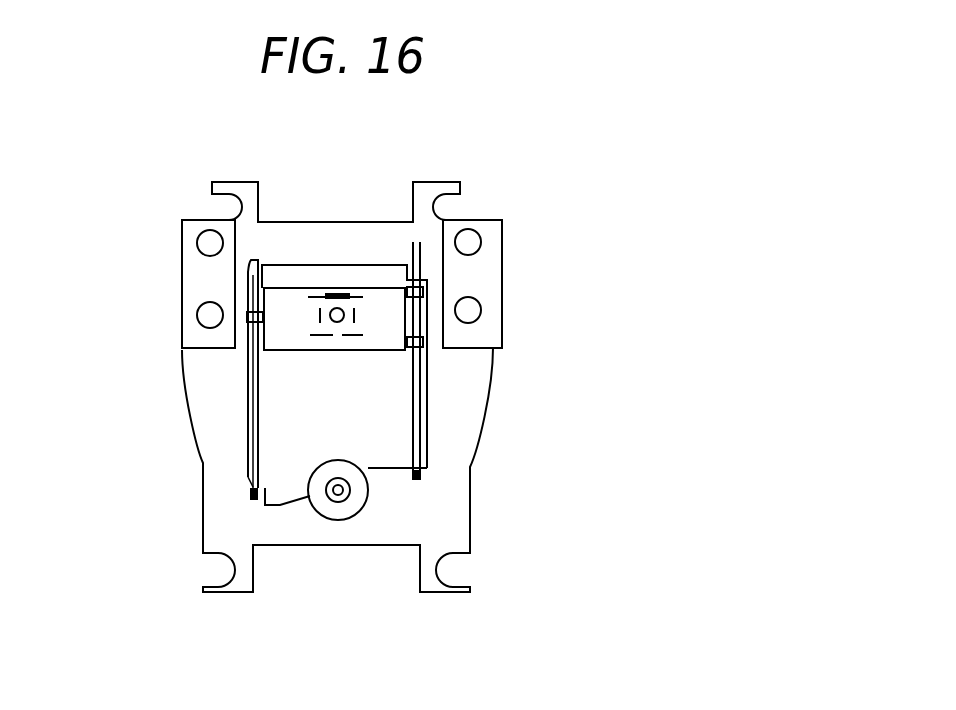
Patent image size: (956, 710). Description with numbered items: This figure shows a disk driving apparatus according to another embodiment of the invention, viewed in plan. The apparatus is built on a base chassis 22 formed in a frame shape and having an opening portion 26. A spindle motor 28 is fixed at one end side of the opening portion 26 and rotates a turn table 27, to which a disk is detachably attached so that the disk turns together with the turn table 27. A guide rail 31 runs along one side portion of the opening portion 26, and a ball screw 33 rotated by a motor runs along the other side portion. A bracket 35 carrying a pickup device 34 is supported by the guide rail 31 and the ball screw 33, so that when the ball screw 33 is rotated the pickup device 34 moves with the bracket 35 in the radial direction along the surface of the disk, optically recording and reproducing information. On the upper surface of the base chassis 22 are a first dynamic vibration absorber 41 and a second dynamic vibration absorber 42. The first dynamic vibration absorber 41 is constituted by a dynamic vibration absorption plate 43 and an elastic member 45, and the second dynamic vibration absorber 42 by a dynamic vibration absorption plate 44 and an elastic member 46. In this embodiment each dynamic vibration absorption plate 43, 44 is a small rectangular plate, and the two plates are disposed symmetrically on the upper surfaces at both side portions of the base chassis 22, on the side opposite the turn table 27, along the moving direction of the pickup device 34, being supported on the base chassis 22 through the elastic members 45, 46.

The base chassis 22 is at (326, 235).
The opening portion 26 is at (248, 412).
The turn table 27 is at (340, 478).
The spindle motor 28 is at (338, 520).
The guide rail 31 is at (250, 396).
The ball screw 33 is at (427, 410).
The pickup device 34 is at (337, 322).
The bracket 35 is at (385, 298).
The first dynamic vibration absorber 41 is at (504, 268).
The second dynamic vibration absorber 42 is at (180, 268).
The dynamic vibration absorption plate 43 is at (487, 288).
The dynamic vibration absorption plate 44 is at (193, 287).
The elastic member 45 is at (470, 310).
The elastic member 46 is at (197, 322).